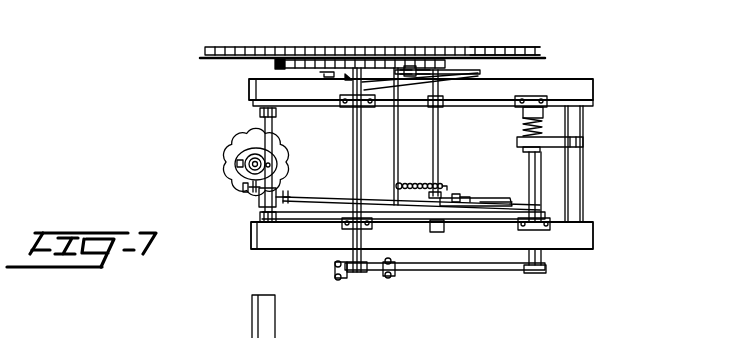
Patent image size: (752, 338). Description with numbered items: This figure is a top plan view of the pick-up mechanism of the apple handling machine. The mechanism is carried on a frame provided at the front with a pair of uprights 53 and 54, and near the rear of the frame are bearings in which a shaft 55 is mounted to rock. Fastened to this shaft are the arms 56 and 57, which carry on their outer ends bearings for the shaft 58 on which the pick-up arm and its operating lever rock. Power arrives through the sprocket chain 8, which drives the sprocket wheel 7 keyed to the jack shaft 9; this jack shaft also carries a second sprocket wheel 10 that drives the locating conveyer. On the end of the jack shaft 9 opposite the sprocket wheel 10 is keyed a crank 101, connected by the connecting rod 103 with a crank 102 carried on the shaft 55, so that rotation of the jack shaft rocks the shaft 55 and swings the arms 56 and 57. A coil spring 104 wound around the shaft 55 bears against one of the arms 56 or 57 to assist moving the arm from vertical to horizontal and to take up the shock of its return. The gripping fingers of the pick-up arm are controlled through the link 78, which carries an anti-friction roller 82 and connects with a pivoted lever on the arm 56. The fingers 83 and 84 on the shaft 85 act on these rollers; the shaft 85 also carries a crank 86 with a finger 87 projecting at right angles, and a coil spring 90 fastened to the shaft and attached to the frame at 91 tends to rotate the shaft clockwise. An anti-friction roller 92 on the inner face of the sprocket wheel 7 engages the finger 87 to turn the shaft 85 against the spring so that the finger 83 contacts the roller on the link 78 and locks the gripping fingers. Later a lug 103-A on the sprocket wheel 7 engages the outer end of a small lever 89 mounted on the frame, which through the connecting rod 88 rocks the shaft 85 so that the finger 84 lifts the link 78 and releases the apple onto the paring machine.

The sprocket wheel 7 is at (275, 66).
The sprocket chain 8 is at (503, 59).
The jack shaft 9 is at (353, 148).
The sprocket wheel 10 is at (327, 46).
The upright 53 is at (249, 97).
The upright 54 is at (251, 237).
The shaft 55 is at (537, 190).
The arm 56 is at (460, 219).
The arm 57 is at (508, 114).
The shaft 58 is at (265, 125).
The link 78 is at (305, 198).
The anti-friction roller 82 is at (455, 194).
The finger 83 is at (463, 197).
The finger 84 is at (498, 196).
The shaft 85 is at (438, 157).
The crank 86 is at (444, 70).
The finger 87 is at (420, 68).
The connecting rod 88 is at (382, 83).
The small lever 89 is at (347, 78).
The coil spring 90 is at (410, 183).
The frame attachment point 91 is at (396, 186).
The anti-friction roller 92 is at (405, 68).
The crank 101 is at (335, 268).
The crank 102 is at (506, 270).
The connecting rod 103 is at (390, 277).
The lug 103-A is at (321, 74).
The coil spring 104 is at (542, 127).